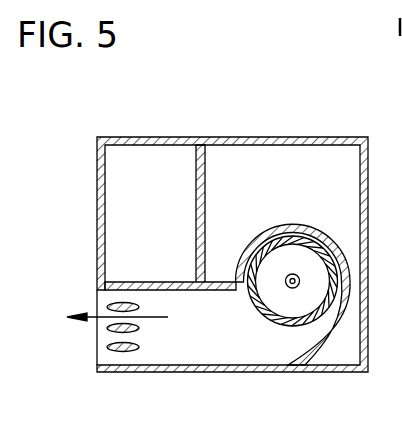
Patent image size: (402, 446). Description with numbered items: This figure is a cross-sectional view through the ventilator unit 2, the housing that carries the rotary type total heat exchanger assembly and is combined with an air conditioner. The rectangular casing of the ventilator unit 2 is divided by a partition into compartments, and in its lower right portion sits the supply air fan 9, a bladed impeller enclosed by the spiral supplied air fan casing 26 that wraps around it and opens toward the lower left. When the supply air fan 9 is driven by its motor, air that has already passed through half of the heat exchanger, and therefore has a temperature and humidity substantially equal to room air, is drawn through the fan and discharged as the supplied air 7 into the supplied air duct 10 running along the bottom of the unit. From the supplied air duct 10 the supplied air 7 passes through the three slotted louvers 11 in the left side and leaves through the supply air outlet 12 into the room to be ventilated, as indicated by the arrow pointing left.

The ventilator unit 2 is at (307, 136).
The supplied air 7 is at (107, 328).
The supply air fan 9 is at (315, 284).
The supplied air duct 10 is at (182, 350).
The louvers 11 is at (116, 352).
The supply air outlet 12 is at (98, 286).
The supplied air fan casing 26 is at (318, 227).